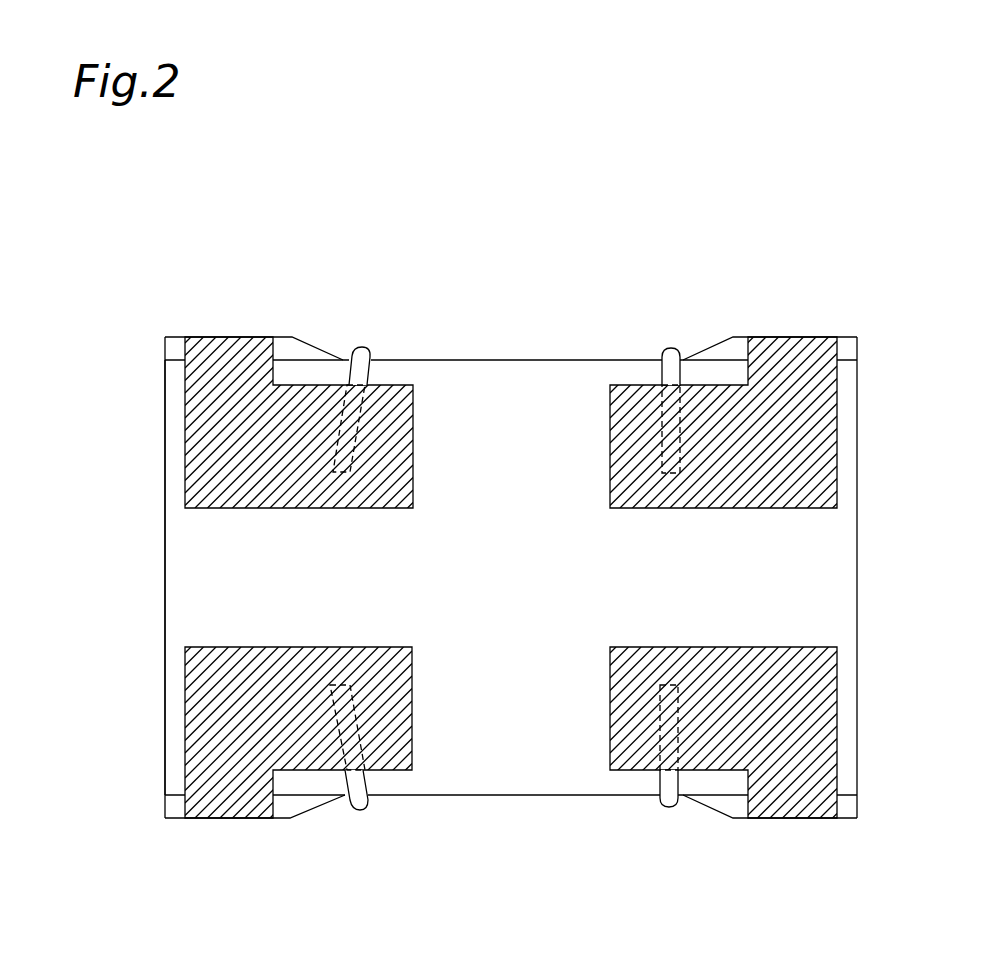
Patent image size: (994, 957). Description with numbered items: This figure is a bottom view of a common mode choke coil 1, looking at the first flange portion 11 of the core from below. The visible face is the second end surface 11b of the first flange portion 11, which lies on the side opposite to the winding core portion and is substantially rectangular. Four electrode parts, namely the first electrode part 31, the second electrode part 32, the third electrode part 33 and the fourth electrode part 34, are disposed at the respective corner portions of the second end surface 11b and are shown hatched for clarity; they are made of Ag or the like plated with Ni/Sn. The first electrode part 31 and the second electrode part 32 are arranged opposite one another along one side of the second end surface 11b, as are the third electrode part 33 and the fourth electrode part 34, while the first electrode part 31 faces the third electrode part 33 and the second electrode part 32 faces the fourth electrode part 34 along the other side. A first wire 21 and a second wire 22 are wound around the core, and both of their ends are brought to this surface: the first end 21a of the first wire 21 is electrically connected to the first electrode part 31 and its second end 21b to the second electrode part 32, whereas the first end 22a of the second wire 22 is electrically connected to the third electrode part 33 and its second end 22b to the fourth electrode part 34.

The common mode choke coil 1 is at (496, 250).
The first flange portion 11 is at (163, 538).
The second end surface 11b is at (190, 593).
The first wire 21 is at (360, 348).
The first end of the first wire 21a is at (357, 430).
The second end of the first wire 21b is at (357, 730).
The second wire 22 is at (671, 348).
The first end of the second wire 22a is at (668, 430).
The second end of the second wire 22b is at (643, 742).
The first electrode part 31 is at (232, 385).
The second electrode part 32 is at (232, 772).
The third electrode part 33 is at (792, 385).
The fourth electrode part 34 is at (790, 772).